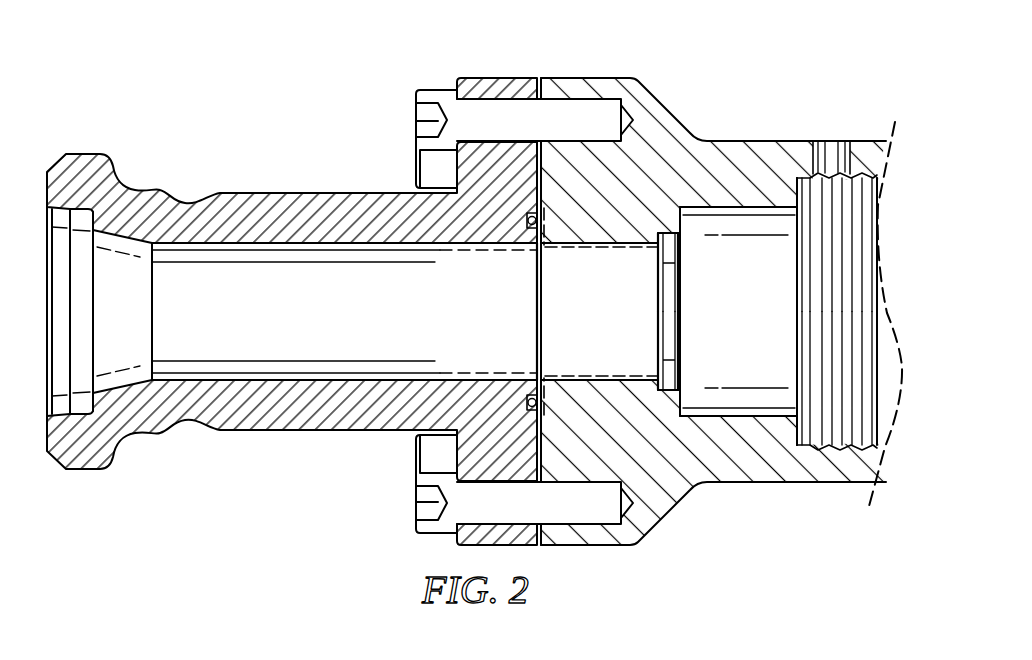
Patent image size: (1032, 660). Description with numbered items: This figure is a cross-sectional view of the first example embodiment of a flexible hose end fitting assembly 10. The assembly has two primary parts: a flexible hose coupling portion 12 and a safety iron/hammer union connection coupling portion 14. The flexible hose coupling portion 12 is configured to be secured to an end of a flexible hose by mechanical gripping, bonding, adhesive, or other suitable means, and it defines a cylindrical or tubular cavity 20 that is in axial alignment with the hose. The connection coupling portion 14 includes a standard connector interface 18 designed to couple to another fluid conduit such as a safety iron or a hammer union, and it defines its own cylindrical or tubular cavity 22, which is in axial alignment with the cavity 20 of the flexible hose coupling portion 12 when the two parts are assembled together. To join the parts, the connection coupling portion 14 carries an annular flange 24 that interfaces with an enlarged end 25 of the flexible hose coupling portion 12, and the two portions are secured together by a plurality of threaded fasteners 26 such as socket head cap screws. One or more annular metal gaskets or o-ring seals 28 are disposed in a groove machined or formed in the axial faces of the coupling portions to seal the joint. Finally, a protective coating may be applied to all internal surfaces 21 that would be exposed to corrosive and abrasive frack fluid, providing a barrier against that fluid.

The flexible hose end fitting assembly 10 is at (215, 66).
The flexible hose coupling portion 12 is at (768, 140).
The connection coupling portion 14 is at (291, 192).
The standard connector interface 18 is at (78, 470).
The cylindrical cavity 20 is at (610, 327).
The internal surfaces 21 is at (587, 250).
The cylindrical cavity 22 is at (322, 324).
The annular flange 24 is at (506, 77).
The enlarged end 25 is at (607, 77).
The threaded fasteners 26 is at (416, 92).
The o-ring seals 28 is at (527, 222).